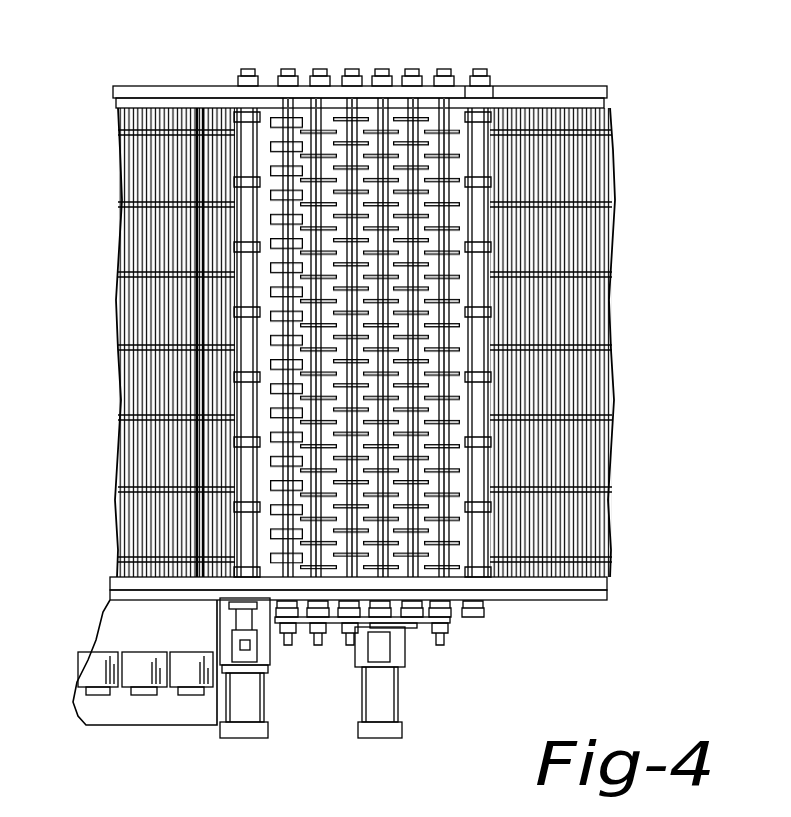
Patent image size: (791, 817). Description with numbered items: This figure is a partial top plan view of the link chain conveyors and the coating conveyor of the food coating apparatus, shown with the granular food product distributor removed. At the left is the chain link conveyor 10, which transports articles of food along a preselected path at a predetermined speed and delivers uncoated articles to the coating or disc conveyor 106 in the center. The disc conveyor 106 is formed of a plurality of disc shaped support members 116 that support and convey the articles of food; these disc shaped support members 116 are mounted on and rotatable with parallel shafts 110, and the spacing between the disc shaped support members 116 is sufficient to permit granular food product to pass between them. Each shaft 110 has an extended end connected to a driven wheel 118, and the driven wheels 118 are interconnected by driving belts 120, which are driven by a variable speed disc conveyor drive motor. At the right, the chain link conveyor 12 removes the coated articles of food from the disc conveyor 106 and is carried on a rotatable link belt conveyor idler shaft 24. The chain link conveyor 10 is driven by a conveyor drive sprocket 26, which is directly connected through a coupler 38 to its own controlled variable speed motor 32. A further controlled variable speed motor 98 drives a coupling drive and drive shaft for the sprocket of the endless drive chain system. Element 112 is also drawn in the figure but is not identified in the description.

The chain link conveyor 10 is at (155, 160).
The chain link conveyor 12 is at (577, 182).
The disc conveyor 106 is at (452, 108).
The disc shaped support members 116 is at (467, 302).
The link belt conveyor idler shaft 24 is at (470, 582).
The conveyor drive sprocket 26 is at (237, 583).
The bottom plate 112 is at (453, 595).
The shafts 110 is at (440, 582).
The driving belts 120 is at (427, 648).
The driven wheel 118 is at (425, 625).
The coupler 38 is at (242, 645).
The controlled variable speed motor 32 is at (238, 725).
The controlled variable speed motor 98 is at (373, 695).